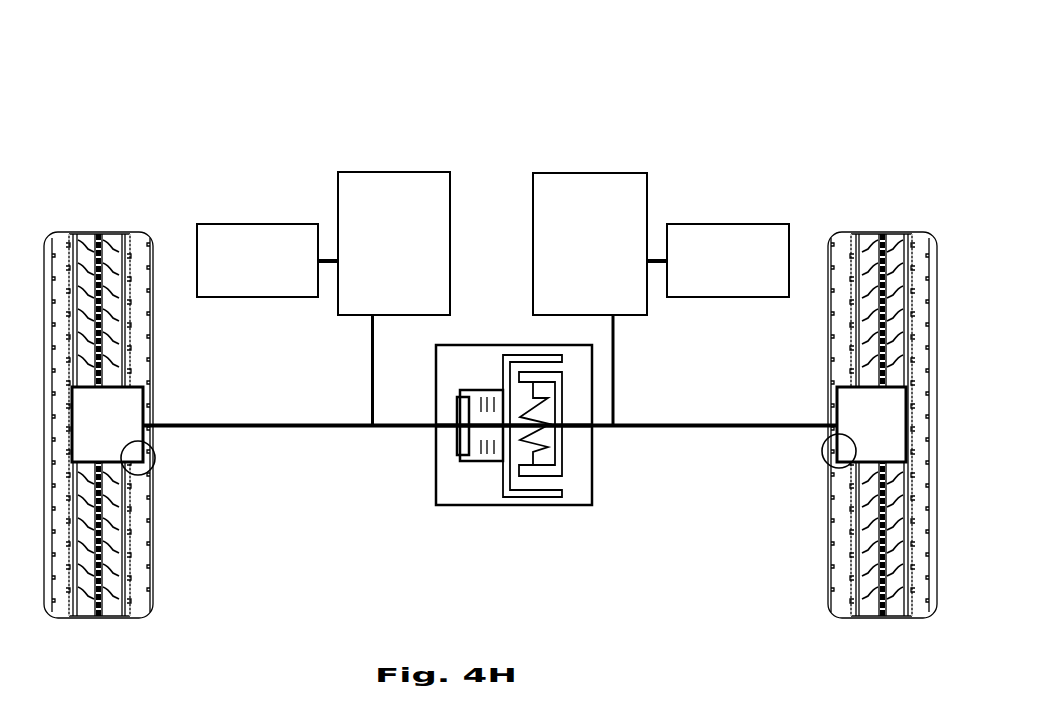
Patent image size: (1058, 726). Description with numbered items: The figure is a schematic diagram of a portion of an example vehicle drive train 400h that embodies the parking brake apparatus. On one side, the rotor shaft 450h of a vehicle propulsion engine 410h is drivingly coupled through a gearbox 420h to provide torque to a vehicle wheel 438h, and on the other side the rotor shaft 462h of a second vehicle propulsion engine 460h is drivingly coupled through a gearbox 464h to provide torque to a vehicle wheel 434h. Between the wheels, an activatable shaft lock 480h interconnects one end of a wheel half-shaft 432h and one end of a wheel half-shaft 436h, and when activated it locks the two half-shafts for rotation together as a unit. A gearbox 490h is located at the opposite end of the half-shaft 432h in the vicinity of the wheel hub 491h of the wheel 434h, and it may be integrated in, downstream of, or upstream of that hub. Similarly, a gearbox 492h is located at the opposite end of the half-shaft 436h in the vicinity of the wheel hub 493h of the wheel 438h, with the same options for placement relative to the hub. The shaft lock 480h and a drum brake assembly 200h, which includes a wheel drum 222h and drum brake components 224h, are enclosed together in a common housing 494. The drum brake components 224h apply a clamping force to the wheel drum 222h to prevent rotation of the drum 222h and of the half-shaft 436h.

The vehicle drive train 400h is at (892, 118).
The vehicle propulsion engine 410h is at (740, 224).
The gearbox 420h is at (590, 173).
The rotor shaft 450h is at (655, 258).
The vehicle propulsion engine 460h is at (226, 224).
The rotor shaft 462h is at (333, 260).
The gearbox 464h is at (396, 172).
The drum brake assembly 200h is at (539, 420).
The wheel drum 222h is at (545, 498).
The drum brake components 224h is at (563, 470).
The activatable shaft lock 480h is at (465, 462).
The common housing 494 is at (498, 505).
The wheel half-shaft 432h is at (300, 430).
The wheel half-shaft 436h is at (700, 430).
The gearbox 490h is at (120, 408).
The wheel hub 491h is at (152, 468).
The gearbox 492h is at (855, 405).
The wheel hub 493h is at (845, 465).
The vehicle wheel 434h is at (150, 555).
The vehicle wheel 438h is at (828, 560).